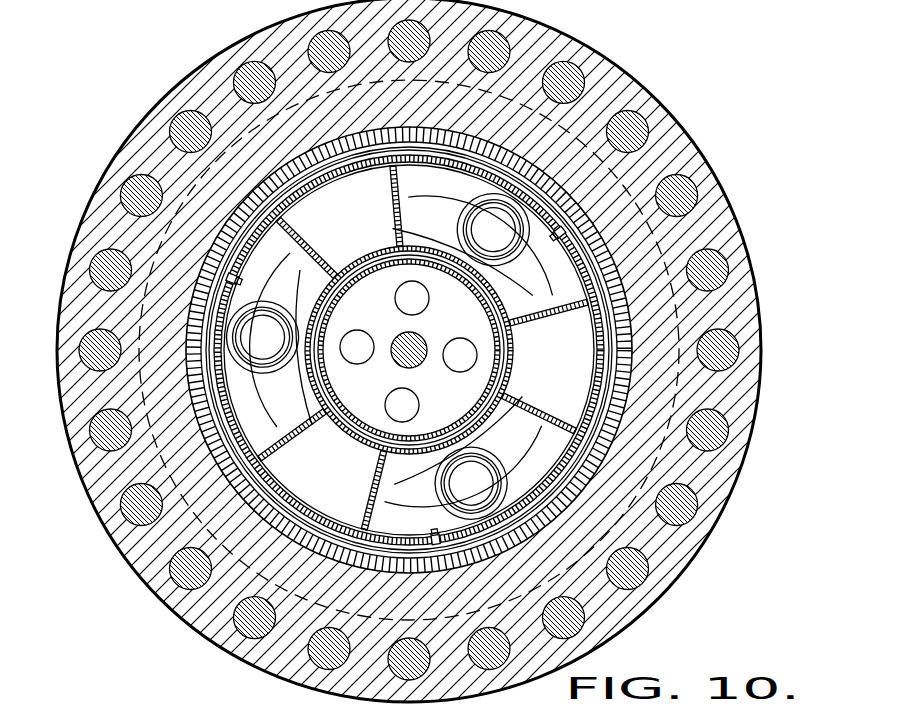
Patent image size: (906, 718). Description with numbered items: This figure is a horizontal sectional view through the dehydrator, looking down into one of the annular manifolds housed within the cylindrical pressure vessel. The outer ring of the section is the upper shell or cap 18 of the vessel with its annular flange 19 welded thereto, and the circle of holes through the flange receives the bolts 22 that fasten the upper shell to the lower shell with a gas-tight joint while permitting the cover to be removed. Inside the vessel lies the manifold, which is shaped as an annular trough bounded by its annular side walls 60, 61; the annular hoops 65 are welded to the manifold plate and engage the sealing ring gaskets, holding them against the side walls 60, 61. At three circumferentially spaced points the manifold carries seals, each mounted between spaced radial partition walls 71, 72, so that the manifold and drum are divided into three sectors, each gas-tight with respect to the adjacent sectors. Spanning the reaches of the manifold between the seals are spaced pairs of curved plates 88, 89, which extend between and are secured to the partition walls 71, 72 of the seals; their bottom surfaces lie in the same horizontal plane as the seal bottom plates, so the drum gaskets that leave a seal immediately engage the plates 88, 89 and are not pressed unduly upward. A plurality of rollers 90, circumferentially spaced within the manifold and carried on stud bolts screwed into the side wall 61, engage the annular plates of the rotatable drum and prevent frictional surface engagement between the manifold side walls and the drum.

The upper shell or cap 18 is at (398, 97).
The annular flange 19 is at (622, 76).
The bolts 22 is at (650, 126).
The annular side wall 61 is at (258, 205).
The annular side wall 60 is at (335, 294).
The annular hoops 65 is at (338, 418).
The radial partition wall 71 is at (394, 222).
The radial partition wall 72 is at (322, 250).
The curved plate 88 is at (268, 398).
The curved plate 89 is at (302, 383).
The rollers 90 is at (562, 242).